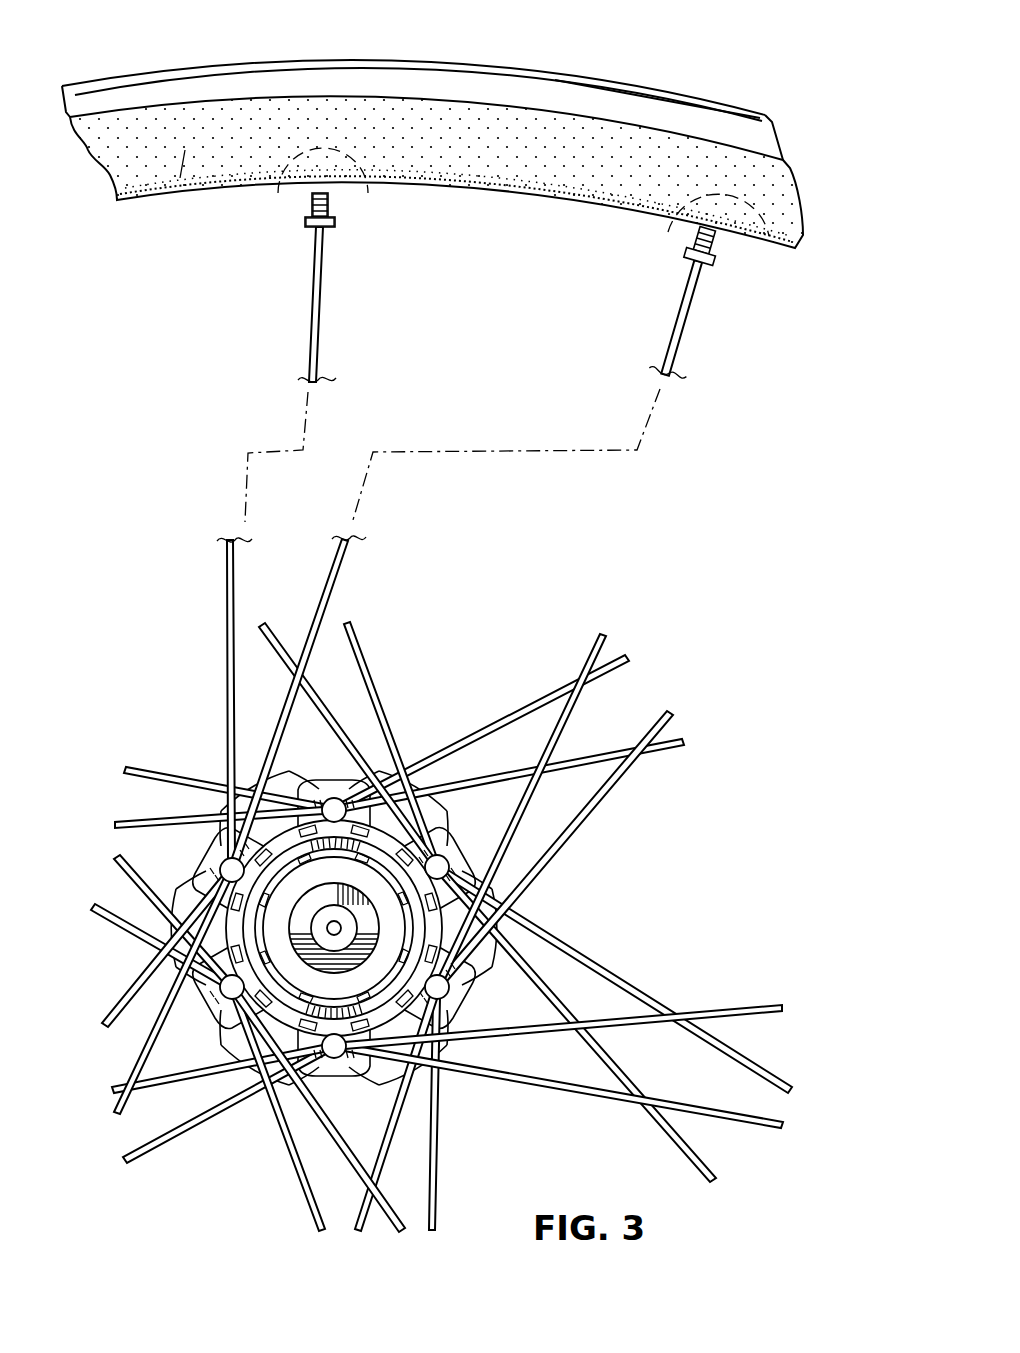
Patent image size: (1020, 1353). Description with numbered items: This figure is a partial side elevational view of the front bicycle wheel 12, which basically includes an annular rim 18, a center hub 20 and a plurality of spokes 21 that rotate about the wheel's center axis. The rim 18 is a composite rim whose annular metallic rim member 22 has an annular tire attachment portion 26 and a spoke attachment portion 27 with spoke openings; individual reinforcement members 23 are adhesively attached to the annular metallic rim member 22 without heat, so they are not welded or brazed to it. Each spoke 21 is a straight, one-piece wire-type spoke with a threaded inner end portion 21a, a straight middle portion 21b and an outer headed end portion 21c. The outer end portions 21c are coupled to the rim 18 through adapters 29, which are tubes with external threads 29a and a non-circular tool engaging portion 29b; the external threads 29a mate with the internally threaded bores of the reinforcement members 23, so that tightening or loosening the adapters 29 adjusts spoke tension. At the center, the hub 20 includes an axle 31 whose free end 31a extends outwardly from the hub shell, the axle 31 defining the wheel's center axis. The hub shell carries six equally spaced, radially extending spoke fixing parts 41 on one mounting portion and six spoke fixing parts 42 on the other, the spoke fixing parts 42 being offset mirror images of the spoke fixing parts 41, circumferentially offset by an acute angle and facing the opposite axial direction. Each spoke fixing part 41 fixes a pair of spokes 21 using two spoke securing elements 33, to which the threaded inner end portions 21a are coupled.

The front bicycle wheel 12 is at (676, 538).
The rim 18 is at (648, 70).
The hub 20 is at (578, 898).
The spokes 21 is at (388, 703).
The threaded inner end portion 21a is at (230, 843).
The middle portion 21b is at (232, 565).
The outer headed end portion 21c is at (312, 245).
The annular metallic rim member 22 is at (506, 195).
The reinforcement members 23 is at (285, 188).
The annular tire attachment portion 26 is at (532, 72).
The spoke attachment portion 27 is at (175, 198).
The adapters 29 is at (300, 228).
The external threads 29a is at (330, 200).
The tool engaging portion 29b is at (337, 222).
The axle 31 is at (300, 918).
The free end of axle 31a is at (315, 932).
The spoke securing elements 33 is at (325, 795).
The spoke fixing parts 41 is at (338, 780).
The spoke fixing parts 42 is at (285, 780).